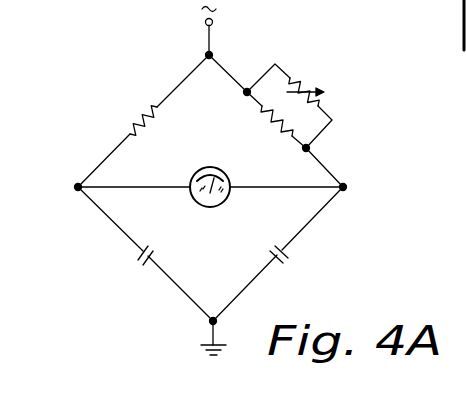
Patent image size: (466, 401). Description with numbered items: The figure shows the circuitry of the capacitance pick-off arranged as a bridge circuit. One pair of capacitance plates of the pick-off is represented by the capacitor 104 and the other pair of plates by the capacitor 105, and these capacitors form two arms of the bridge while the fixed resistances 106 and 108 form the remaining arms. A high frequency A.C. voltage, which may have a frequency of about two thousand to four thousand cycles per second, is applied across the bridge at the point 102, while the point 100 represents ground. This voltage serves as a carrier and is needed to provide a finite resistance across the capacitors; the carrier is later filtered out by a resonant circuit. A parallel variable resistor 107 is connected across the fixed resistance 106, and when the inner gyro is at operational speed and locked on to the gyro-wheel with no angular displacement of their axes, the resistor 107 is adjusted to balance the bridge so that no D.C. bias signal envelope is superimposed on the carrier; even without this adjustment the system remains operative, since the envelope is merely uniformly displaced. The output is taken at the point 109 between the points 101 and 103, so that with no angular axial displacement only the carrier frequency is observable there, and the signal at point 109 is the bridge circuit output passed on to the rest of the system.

The ground point 100 is at (212, 322).
The bridge point 101 is at (345, 188).
The voltage application point 102 is at (207, 55).
The bridge point 103 is at (77, 188).
The capacitor 104 is at (138, 252).
The capacitor 105 is at (289, 252).
The fixed resistance 106 is at (265, 112).
The parallel variable resistor 107 is at (298, 82).
The fixed resistance 108 is at (134, 128).
The output point 109 is at (205, 207).